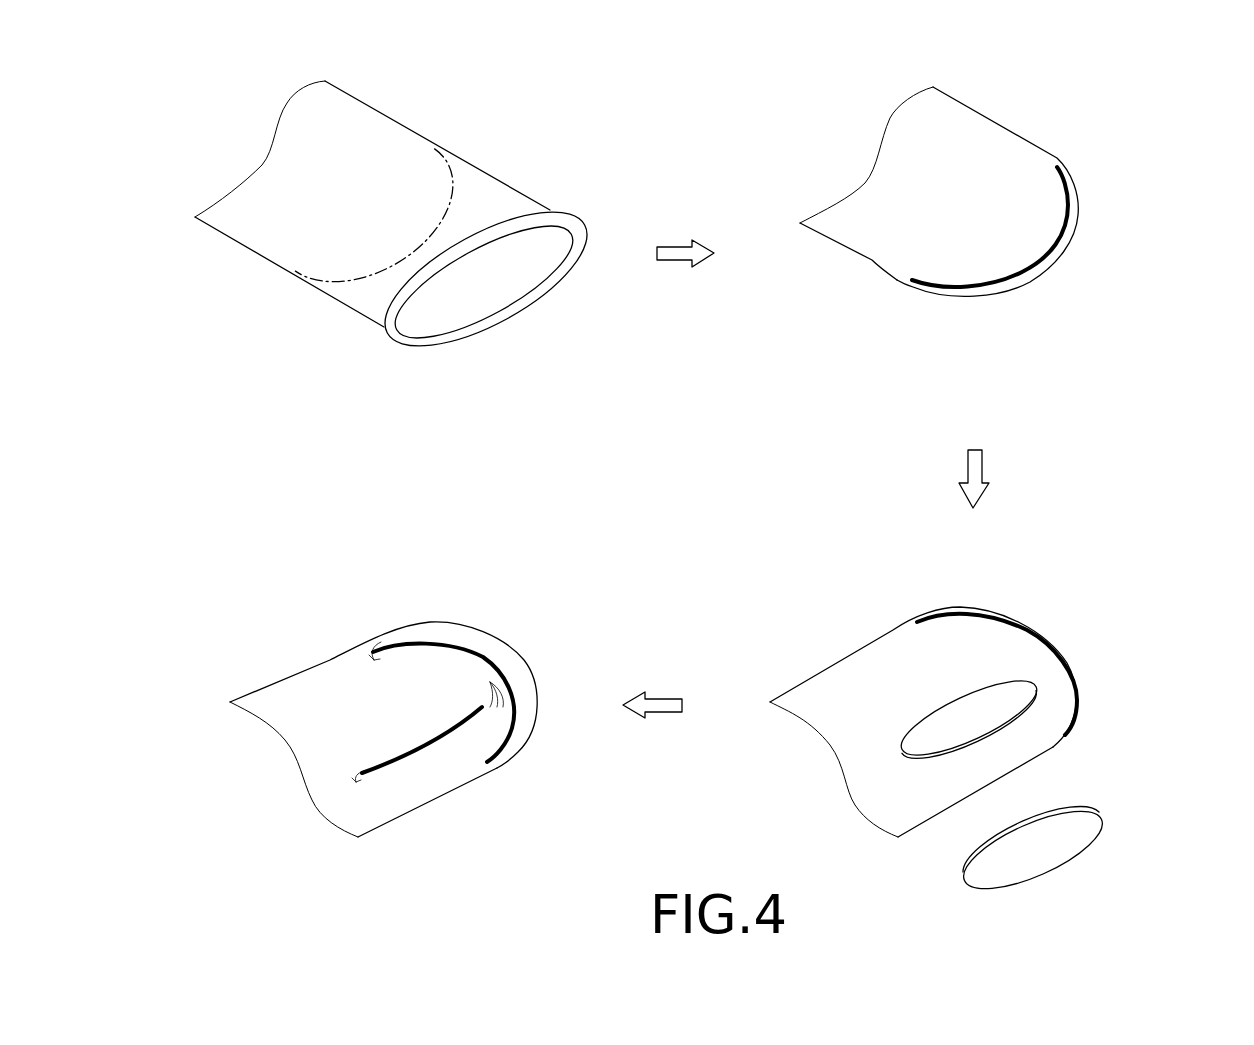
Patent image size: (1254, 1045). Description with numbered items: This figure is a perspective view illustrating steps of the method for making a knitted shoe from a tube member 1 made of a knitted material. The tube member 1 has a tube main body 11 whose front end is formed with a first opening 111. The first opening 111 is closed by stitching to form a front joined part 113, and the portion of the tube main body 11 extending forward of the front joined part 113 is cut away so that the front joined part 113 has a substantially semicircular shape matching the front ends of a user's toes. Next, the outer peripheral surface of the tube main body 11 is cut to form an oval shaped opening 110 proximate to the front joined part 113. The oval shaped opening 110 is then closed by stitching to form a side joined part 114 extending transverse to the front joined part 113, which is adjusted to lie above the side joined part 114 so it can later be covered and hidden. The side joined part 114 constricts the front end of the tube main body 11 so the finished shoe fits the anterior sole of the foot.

The tube member 1 is at (463, 157).
The tube main body 11 is at (523, 198).
The first opening 111 is at (500, 280).
The front joined part 113 is at (963, 293).
The oval shaped opening 110 is at (992, 730).
The side joined part 114 is at (428, 747).